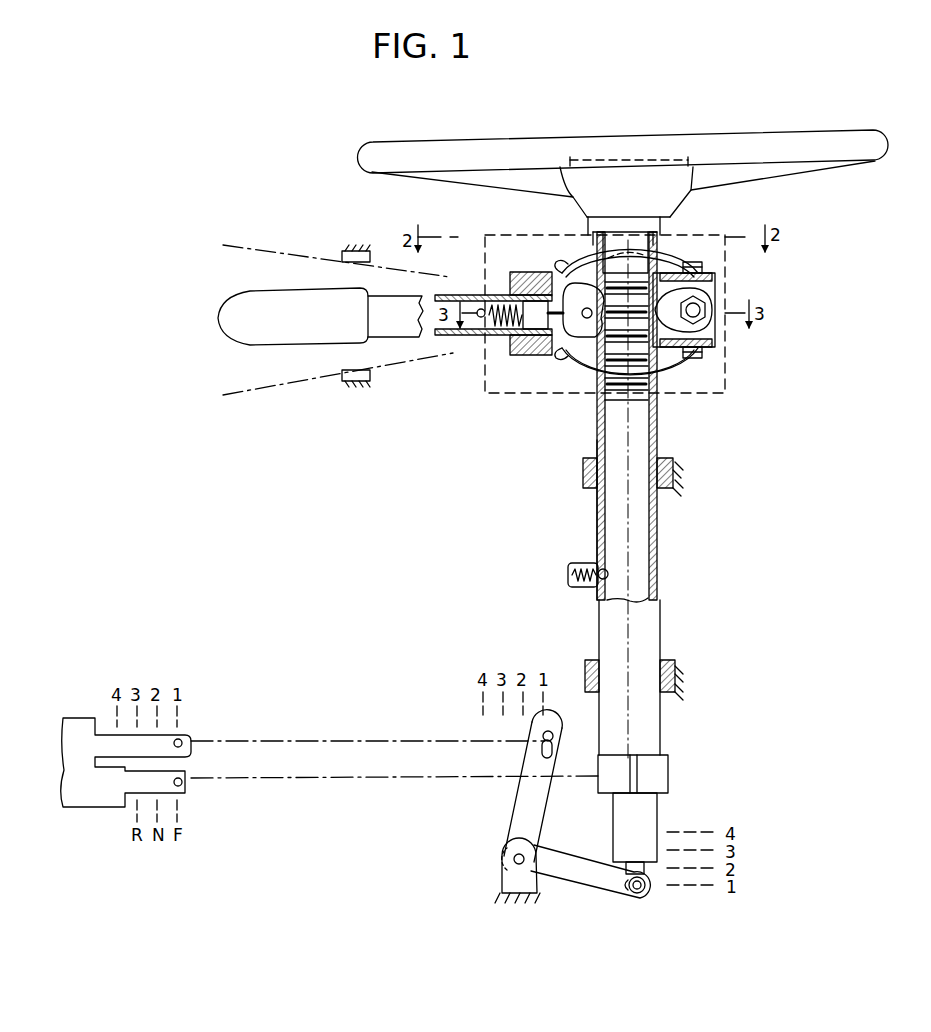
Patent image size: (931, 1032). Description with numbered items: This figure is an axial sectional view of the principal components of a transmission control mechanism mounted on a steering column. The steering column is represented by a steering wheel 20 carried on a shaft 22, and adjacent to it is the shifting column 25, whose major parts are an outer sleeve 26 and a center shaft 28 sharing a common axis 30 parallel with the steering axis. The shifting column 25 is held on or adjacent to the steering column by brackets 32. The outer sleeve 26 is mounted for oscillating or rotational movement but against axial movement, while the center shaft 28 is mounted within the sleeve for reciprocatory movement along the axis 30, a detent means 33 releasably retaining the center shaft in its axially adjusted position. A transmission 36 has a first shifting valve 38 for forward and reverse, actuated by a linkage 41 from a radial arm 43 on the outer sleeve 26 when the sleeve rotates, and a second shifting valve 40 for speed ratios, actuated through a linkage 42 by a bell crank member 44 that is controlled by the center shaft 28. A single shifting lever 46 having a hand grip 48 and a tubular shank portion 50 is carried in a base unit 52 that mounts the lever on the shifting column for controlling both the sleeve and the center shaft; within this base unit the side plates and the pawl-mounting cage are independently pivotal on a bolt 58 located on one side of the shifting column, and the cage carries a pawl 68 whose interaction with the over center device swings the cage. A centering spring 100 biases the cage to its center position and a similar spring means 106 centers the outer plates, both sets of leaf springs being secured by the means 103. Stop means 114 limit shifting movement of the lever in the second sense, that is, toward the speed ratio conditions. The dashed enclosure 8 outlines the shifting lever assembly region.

The shift control mechanism 8 is at (512, 389).
The steering wheel 20 is at (665, 140).
The shaft 22 is at (582, 228).
The shifting column 25 is at (593, 517).
The outer sleeve 26 is at (657, 550).
The center shaft 28 is at (640, 515).
The common axis 30 is at (628, 580).
The brackets 32 is at (675, 470).
The detent means 33 is at (566, 575).
The transmission 36 is at (80, 730).
The first shifting valve 38 is at (185, 788).
The second shifting valve 40 is at (185, 735).
The linkage 41 is at (370, 783).
The linkage 42 is at (366, 722).
The radial arm 43 is at (640, 785).
The bell crank member 44 is at (527, 795).
The shifting lever 46 is at (420, 336).
The hand grip 48 is at (253, 320).
The shank portion 50 is at (393, 340).
The base unit 52 is at (672, 244).
The bolt 58 is at (712, 347).
The pawl 68 is at (578, 336).
The centering spring 100 is at (674, 252).
The securing means 103 is at (712, 270).
The centering spring means 106 is at (681, 372).
The stop means 114 is at (341, 254).